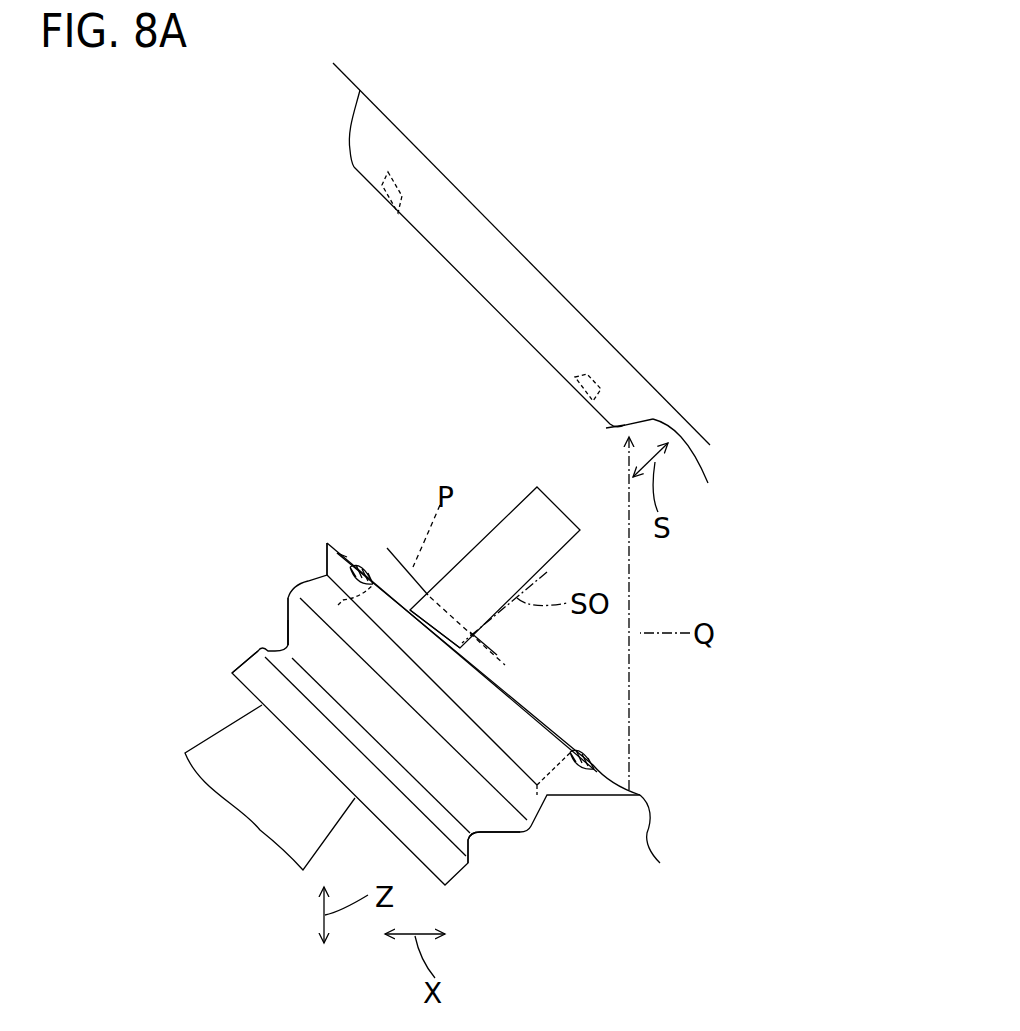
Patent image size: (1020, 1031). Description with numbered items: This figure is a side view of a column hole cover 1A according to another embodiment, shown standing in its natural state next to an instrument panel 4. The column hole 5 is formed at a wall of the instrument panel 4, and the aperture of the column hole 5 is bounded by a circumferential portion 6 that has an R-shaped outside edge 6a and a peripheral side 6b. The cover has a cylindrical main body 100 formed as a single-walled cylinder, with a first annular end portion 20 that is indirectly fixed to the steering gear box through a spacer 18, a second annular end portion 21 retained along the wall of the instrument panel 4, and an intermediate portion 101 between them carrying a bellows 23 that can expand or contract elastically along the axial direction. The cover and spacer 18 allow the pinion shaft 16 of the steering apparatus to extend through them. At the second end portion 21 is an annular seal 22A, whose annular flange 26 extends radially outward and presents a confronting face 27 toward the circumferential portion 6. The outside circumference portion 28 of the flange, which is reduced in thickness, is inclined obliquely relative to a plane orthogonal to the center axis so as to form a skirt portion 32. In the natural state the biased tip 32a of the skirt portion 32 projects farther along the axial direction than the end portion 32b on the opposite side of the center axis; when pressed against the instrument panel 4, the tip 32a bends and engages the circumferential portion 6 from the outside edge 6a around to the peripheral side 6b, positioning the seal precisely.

The instrument panel 4 is at (622, 346).
The column hole 5 is at (398, 213).
The circumferential portion 6 is at (575, 394).
The R-shaped outside edge 6a is at (613, 430).
The peripheral side 6b is at (689, 467).
The pinion shaft 16 is at (523, 510).
The spacer 18 is at (212, 750).
The first annular end portion 20 is at (250, 663).
The second annular end portion 21 is at (313, 583).
The annular seal 22A is at (475, 700).
The bellows 23 is at (493, 820).
The annular flange 26 is at (327, 558).
The confronting face 27 is at (350, 555).
The outside circumference portion 28 is at (660, 845).
The skirt portion 32 is at (532, 737).
The biased tip 32a is at (622, 797).
The end portion 32b is at (347, 557).
The cylindrical main body 100 is at (412, 699).
The intermediate portion 101 is at (283, 617).
The column hole cover 1A is at (285, 624).